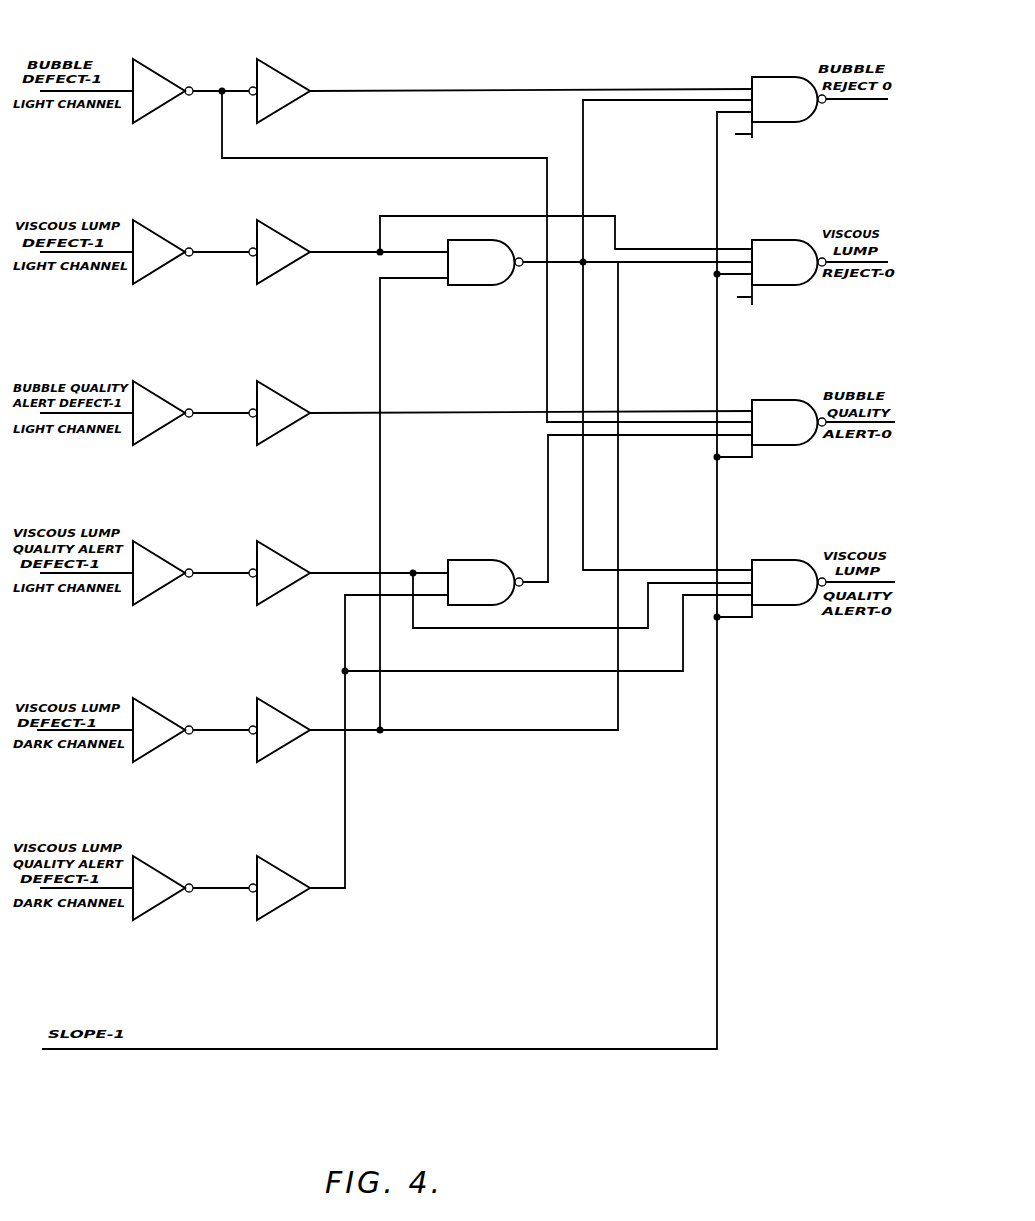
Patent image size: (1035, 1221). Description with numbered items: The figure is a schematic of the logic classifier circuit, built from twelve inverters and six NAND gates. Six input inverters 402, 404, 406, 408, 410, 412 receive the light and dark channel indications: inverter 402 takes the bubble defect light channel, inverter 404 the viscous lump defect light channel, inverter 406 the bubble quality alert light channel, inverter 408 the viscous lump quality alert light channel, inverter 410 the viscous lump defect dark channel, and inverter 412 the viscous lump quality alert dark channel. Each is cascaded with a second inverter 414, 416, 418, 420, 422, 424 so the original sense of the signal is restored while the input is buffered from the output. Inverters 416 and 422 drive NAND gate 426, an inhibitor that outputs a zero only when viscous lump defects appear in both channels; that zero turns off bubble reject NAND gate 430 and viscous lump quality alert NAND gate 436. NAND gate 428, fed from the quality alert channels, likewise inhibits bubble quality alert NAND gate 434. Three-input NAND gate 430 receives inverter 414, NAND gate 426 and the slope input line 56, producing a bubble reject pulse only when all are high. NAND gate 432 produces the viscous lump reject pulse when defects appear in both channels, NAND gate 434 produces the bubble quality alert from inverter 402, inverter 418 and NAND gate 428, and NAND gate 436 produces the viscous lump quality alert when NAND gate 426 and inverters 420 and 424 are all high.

The inverter 402 is at (144, 66).
The inverter 404 is at (144, 226).
The inverter 406 is at (147, 389).
The inverter 408 is at (147, 549).
The inverter 410 is at (147, 707).
The inverter 412 is at (147, 868).
The inverter 414 is at (272, 65).
The inverter 416 is at (272, 228).
The inverter 418 is at (275, 391).
The inverter 420 is at (274, 550).
The inverter 422 is at (272, 709).
The inverter 424 is at (272, 869).
The NAND gate 426 is at (463, 285).
The NAND gate 428 is at (465, 560).
The three-input NAND gate 430 is at (777, 77).
The NAND gate 432 is at (797, 240).
The NAND gate 434 is at (795, 400).
The NAND gate 436 is at (803, 560).
The slope-1 signal line 56 is at (578, 1050).